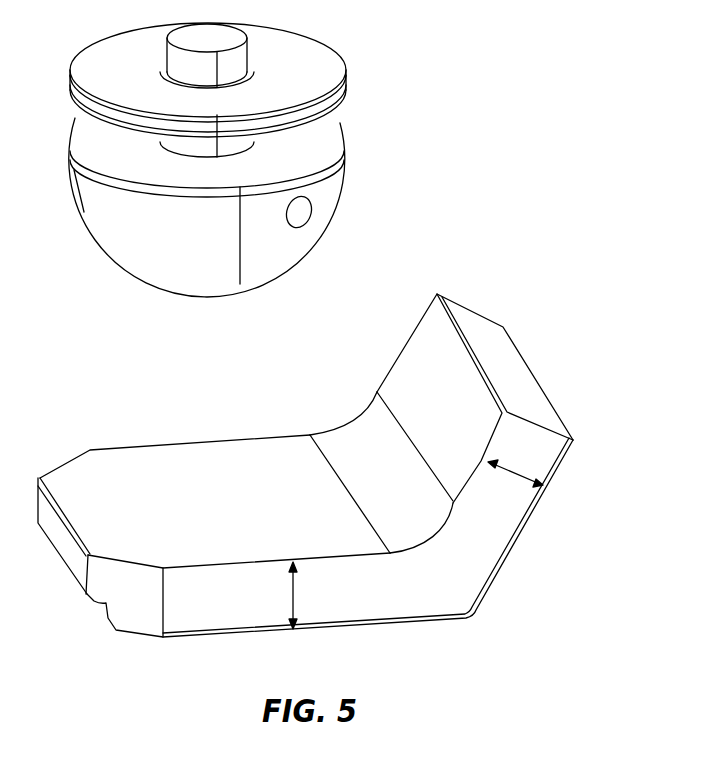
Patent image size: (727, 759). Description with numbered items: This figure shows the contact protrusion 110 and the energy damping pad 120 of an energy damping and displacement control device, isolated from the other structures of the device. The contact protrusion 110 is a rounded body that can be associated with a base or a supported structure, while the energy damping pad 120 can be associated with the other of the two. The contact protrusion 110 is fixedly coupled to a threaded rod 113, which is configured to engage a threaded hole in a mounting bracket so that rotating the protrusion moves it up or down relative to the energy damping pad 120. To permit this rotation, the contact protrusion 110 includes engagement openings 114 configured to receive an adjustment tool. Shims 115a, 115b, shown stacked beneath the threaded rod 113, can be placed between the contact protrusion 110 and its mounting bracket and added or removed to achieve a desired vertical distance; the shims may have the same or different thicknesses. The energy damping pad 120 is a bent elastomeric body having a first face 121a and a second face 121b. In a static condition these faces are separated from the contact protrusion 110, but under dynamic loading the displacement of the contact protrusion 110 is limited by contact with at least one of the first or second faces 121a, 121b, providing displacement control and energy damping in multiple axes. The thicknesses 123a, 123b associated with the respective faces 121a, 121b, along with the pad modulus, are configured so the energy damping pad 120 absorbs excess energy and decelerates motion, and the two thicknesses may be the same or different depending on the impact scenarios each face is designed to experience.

The contact protrusion 110 is at (128, 266).
The threaded rod 113 is at (232, 62).
The engagement opening 114 is at (312, 208).
The shim 115a is at (348, 70).
The shim 115b is at (348, 92).
The energy damping pad 120 is at (323, 461).
The first face 121a is at (248, 516).
The second face 121b is at (464, 404).
The thickness 123a is at (296, 595).
The thickness 123b is at (510, 471).